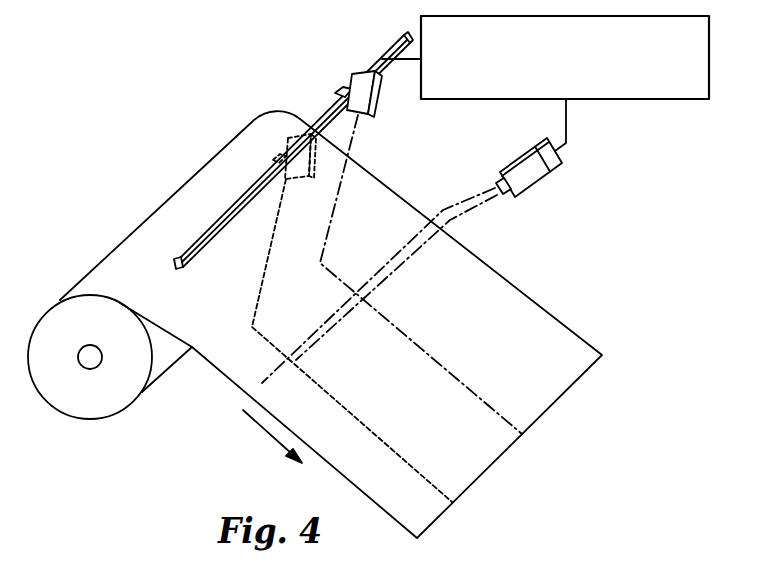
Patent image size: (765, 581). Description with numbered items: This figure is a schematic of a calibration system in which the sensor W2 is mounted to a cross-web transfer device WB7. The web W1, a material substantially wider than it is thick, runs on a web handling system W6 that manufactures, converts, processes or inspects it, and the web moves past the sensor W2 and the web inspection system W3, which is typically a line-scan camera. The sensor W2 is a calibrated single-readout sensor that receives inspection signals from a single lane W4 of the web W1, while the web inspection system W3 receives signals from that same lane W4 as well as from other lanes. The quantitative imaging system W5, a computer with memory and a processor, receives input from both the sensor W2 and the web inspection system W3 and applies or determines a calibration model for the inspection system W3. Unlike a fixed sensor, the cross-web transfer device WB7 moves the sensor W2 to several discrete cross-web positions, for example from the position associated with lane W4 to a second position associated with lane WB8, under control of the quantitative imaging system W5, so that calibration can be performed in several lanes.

The web W1 is at (553, 330).
The sensor W2 is at (362, 88).
The web inspection system W3 is at (528, 177).
The single lane W4 is at (510, 416).
The quantitative imaging system W5 is at (616, 99).
The web handling system W6 is at (72, 392).
The cross-web transfer device WB7 is at (220, 216).
The lane WB8 is at (440, 484).